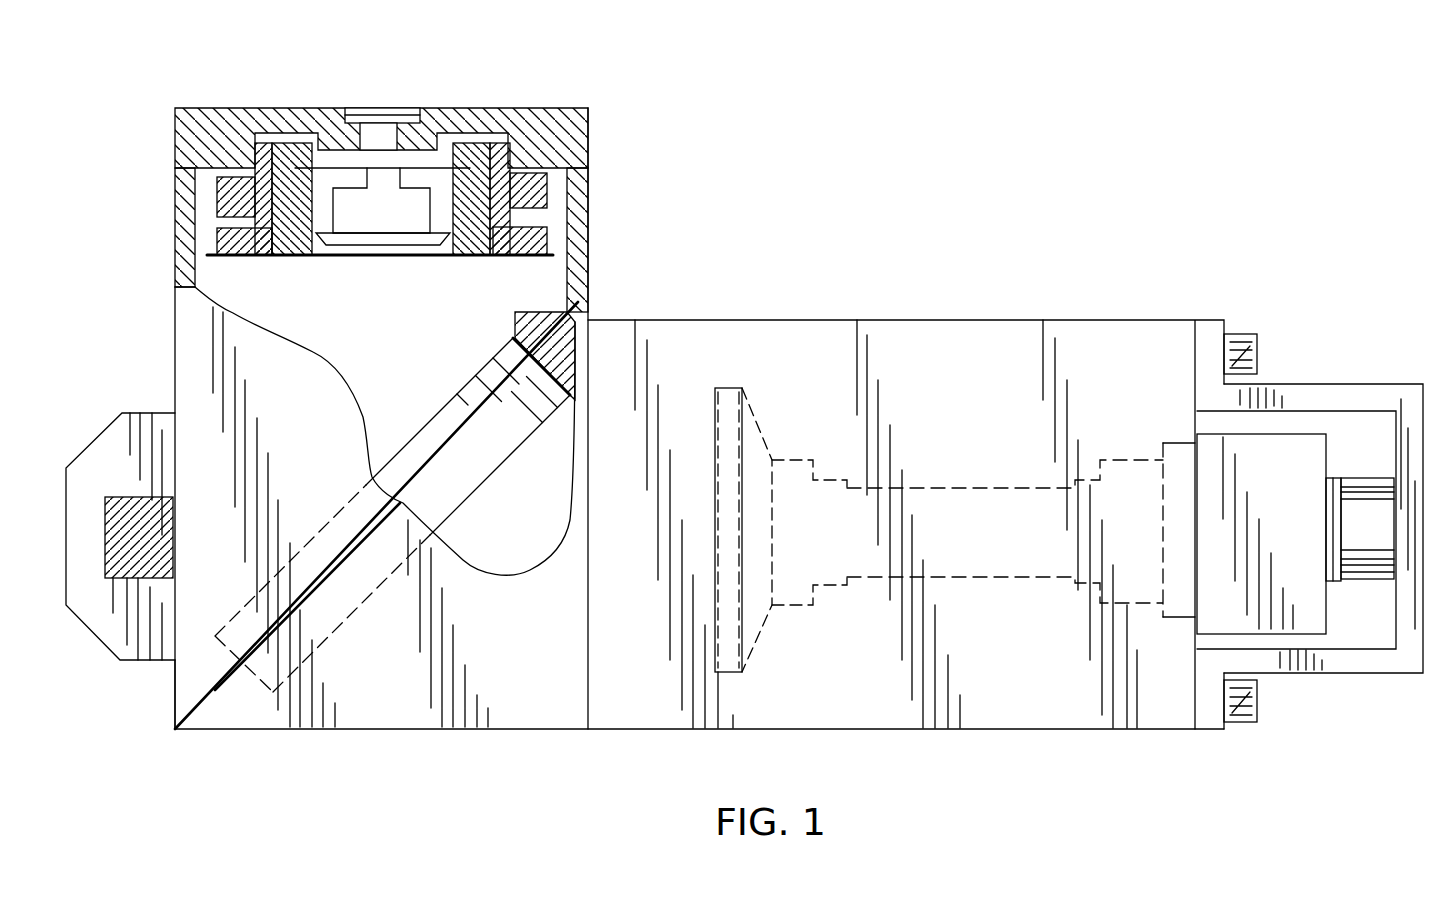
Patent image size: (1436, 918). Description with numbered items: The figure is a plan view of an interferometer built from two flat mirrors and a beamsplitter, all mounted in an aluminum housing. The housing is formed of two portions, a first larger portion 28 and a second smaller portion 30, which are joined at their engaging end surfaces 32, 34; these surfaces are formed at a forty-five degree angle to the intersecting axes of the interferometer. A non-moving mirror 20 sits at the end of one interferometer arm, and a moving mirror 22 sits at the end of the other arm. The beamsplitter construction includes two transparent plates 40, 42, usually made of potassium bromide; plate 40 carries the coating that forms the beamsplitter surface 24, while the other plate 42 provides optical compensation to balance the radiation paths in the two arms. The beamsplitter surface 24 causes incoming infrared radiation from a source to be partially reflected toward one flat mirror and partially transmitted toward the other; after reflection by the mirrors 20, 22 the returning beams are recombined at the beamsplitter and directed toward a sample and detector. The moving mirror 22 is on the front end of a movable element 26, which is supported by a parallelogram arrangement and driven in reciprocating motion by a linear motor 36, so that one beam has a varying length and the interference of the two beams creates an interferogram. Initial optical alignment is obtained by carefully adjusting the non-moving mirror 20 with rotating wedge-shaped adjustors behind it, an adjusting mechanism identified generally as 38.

The non-moving mirror 20 is at (505, 259).
The moving mirror 22 is at (713, 425).
The beamsplitter surface 24 is at (463, 442).
The movable element 26 is at (972, 512).
The first larger housing portion 28 is at (836, 305).
The second smaller housing portion 30 is at (598, 281).
The engaging end surface 32 is at (203, 700).
The engaging end surface 34 is at (213, 690).
The linear motor 36 is at (1367, 440).
The adjusting mechanism 38 is at (443, 95).
The transparent plate 40 is at (333, 558).
The transparent plate 42 is at (348, 580).